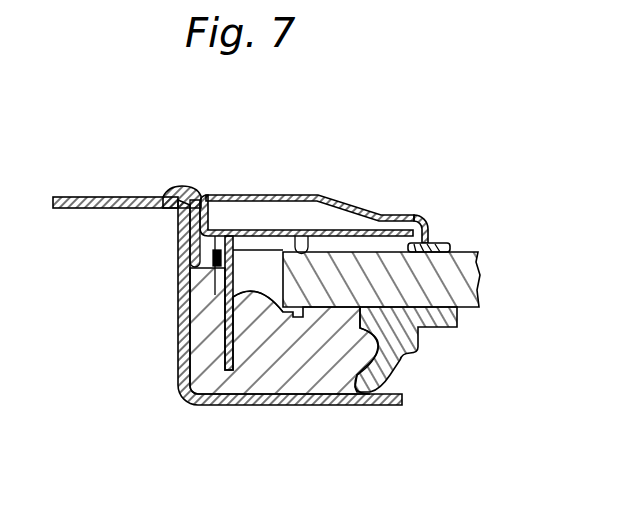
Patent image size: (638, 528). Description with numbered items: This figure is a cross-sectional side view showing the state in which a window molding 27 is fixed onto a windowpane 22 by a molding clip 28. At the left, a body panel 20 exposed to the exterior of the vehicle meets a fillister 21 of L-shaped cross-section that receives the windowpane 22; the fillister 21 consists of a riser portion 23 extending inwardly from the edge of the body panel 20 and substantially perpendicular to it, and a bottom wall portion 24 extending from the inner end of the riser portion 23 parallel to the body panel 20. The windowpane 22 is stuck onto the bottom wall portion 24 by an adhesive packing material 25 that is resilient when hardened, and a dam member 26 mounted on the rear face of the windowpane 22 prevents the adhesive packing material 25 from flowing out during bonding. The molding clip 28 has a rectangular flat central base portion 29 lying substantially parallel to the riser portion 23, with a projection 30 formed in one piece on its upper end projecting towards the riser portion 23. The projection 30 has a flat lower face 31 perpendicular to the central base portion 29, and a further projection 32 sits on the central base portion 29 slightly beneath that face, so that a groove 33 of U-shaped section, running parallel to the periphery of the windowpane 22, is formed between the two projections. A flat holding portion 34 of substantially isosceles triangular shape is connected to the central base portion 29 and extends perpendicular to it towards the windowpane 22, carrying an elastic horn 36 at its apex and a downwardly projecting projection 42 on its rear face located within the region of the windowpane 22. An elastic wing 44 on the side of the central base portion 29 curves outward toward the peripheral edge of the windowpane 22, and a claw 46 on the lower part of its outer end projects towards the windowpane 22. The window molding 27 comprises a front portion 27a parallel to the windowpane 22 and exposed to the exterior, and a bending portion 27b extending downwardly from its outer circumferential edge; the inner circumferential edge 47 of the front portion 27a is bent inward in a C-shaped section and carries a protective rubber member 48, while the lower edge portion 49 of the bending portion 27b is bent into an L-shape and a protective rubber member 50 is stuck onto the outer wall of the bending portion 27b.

The body panel 20 is at (95, 203).
The fillister 21 is at (262, 327).
The windowpane 22 is at (476, 310).
The riser portion 23 is at (180, 347).
The bottom wall portion 24 is at (266, 406).
The adhesive packing material 25 is at (317, 382).
The dam member 26 is at (393, 370).
The window molding 27 is at (284, 215).
The front portion 27a is at (298, 194).
The bending portion 27b is at (167, 210).
The molding clip 28 is at (238, 223).
The central base portion 29 is at (180, 370).
The projection 30 is at (199, 215).
The flat lower face 31 is at (217, 235).
The projection 32 is at (255, 282).
The groove 33 is at (213, 262).
The holding portion 34 is at (343, 228).
The elastic horn 36 is at (410, 230).
The projection 42 is at (270, 228).
The elastic wing 44 is at (232, 322).
The claw 46 is at (240, 374).
The inner circumferential edge 47 is at (433, 237).
The rubber member 48 is at (452, 250).
The lower edge portion 49 is at (187, 260).
The rubber member 50 is at (176, 190).